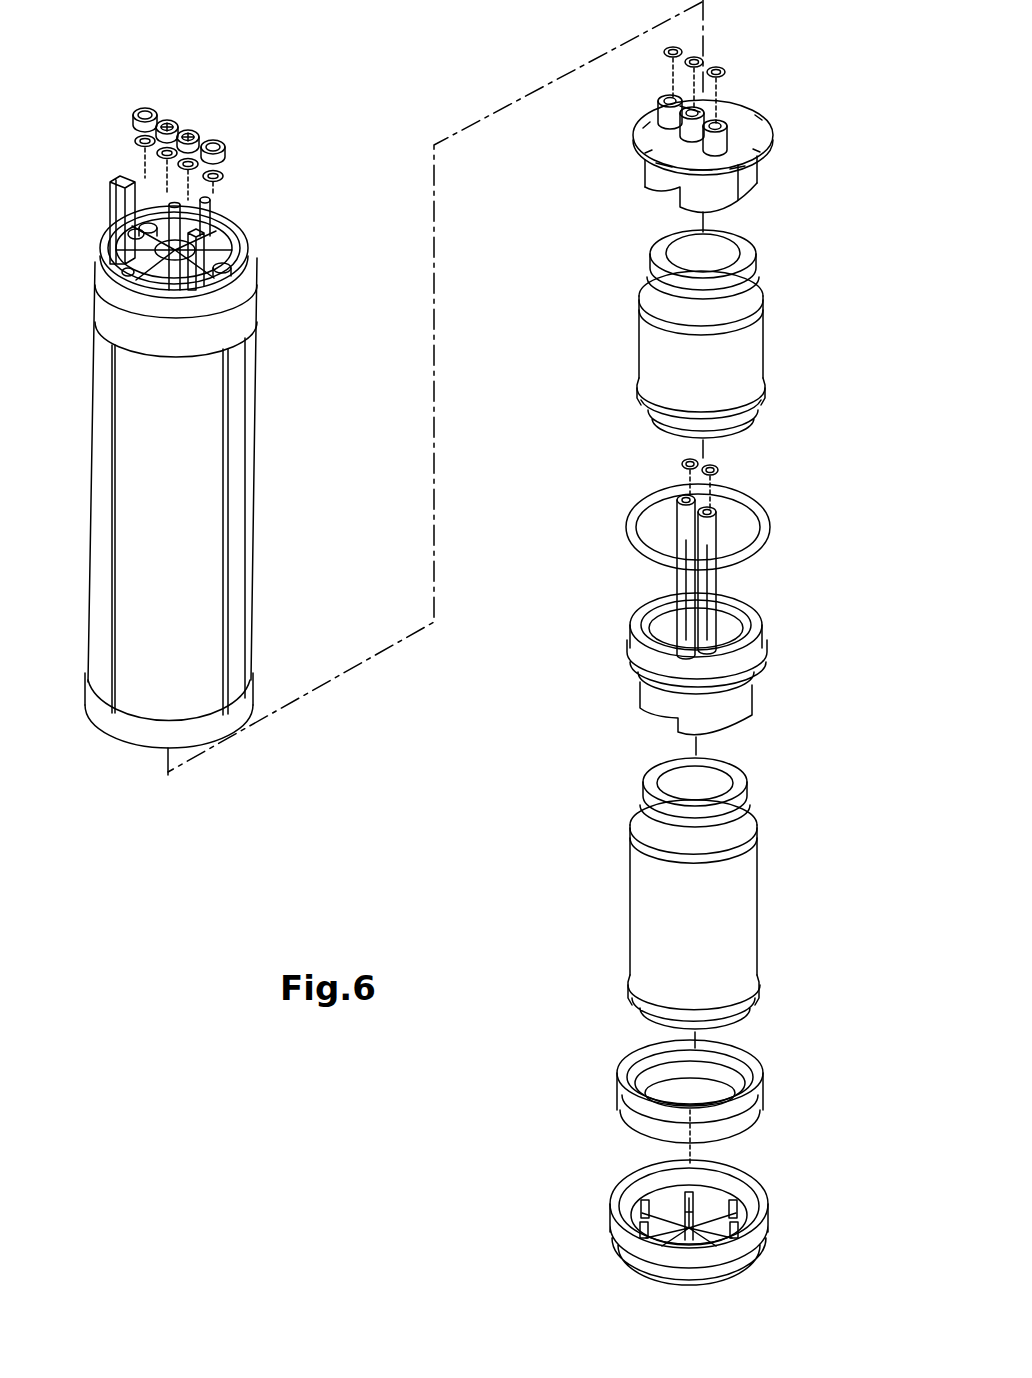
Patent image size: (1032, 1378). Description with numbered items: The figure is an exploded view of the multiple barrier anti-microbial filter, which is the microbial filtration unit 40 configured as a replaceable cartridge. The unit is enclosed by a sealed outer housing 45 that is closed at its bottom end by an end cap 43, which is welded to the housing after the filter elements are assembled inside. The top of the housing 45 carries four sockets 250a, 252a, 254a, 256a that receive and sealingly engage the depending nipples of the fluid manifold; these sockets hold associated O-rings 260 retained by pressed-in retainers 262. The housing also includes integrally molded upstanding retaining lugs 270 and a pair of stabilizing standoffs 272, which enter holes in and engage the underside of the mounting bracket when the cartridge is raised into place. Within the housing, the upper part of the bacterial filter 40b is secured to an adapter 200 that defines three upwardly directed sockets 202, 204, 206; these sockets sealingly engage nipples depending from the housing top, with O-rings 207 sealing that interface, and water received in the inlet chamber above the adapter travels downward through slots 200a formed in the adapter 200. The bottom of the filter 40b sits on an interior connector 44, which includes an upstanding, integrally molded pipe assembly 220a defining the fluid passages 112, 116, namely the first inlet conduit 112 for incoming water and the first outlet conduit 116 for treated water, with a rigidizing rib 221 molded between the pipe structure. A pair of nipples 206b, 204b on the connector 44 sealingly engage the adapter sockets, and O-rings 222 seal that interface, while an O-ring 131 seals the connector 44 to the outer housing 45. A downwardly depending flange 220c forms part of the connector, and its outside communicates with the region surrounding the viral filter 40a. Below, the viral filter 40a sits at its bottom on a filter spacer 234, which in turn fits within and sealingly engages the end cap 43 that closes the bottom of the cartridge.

The microbial filtration unit 40 is at (292, 419).
The outer housing 45 is at (242, 543).
The socket 250a is at (232, 240).
The socket 252a is at (152, 212).
The socket 254a is at (177, 207).
The socket 256a is at (160, 280).
The pressed-in retainer 262 is at (147, 108).
The O-ring 260 is at (135, 141).
The retaining lug 270 is at (193, 265).
The stabilizing standoff 272 is at (127, 273).
The O-ring 207 is at (716, 66).
The adapter 200 is at (757, 178).
The slot 200a is at (728, 102).
The socket 202 is at (667, 116).
The socket 204 is at (688, 128).
The socket 206 is at (722, 137).
The bacterial filter membrane 40b is at (743, 347).
The O-ring 222 is at (682, 464).
The O-ring 131 is at (766, 537).
The nipple 204b is at (682, 511).
The nipple 206b is at (718, 527).
The first inlet conduit 112 is at (687, 585).
The first outlet conduit 116 is at (707, 602).
The pipe assembly 220a is at (725, 583).
The rigidizing rib 221 is at (677, 622).
The interior connector 44 is at (780, 638).
The downwardly depending flange 220c is at (742, 710).
The viral filter membrane 40a is at (727, 905).
The filter spacer 234 is at (760, 1077).
The end cap 43 is at (760, 1247).